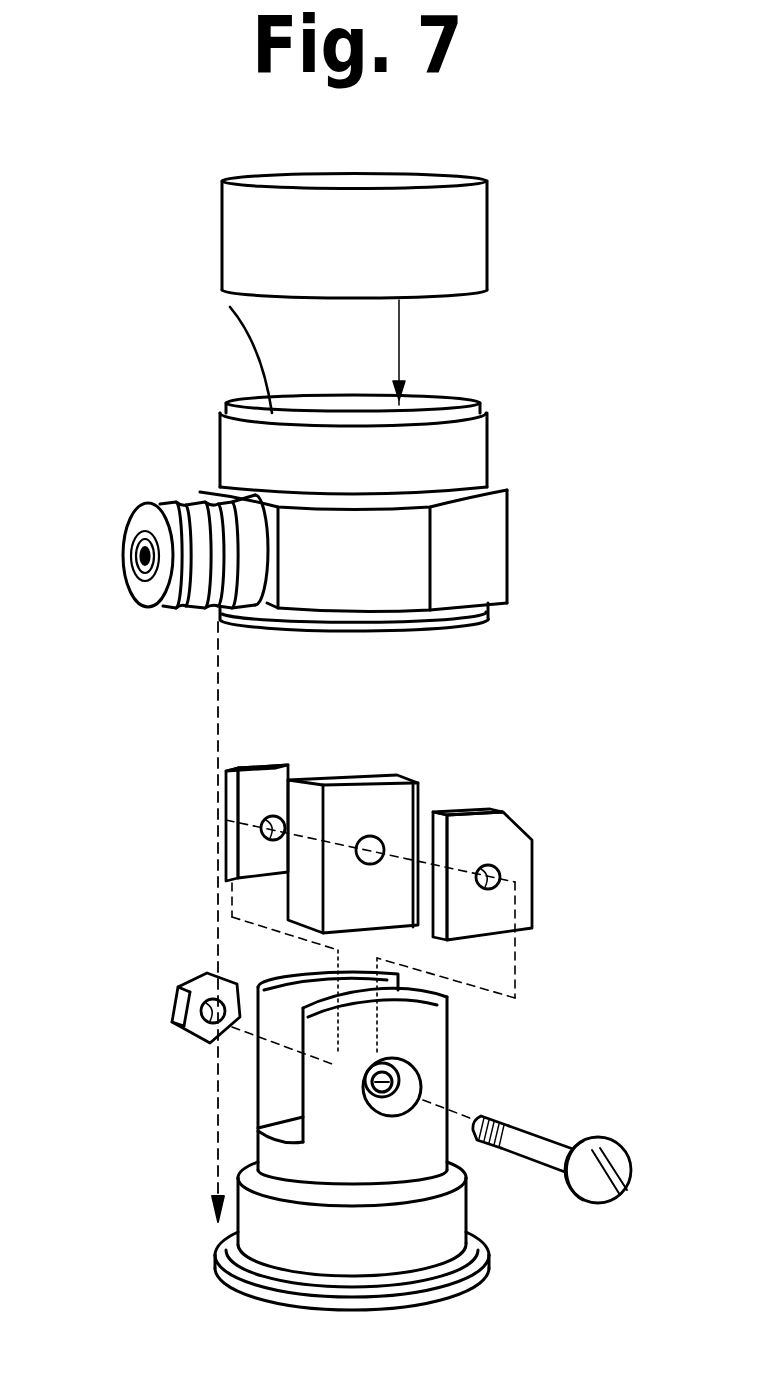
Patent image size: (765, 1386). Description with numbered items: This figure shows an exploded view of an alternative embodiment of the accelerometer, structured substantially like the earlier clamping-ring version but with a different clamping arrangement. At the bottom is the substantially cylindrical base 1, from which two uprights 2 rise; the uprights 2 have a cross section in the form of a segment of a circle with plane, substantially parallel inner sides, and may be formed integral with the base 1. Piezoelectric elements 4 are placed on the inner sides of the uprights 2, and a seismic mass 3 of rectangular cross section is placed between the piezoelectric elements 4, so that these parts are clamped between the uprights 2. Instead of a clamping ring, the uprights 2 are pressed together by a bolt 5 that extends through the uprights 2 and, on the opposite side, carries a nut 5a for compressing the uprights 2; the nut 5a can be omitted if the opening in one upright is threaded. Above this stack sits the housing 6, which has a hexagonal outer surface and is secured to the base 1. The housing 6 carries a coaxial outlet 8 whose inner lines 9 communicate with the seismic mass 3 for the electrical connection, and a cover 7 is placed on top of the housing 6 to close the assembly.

The base 1 is at (215, 1260).
The uprights 2 is at (250, 1042).
The seismic mass 3 is at (296, 891).
The piezoelectric elements 4 is at (293, 772).
The bolt 5 is at (552, 1133).
The nut 5a is at (172, 1003).
The housing 6 is at (230, 447).
The cover 7 is at (230, 211).
The coaxial outlet 8 is at (140, 577).
The inner lines 9 is at (264, 370).